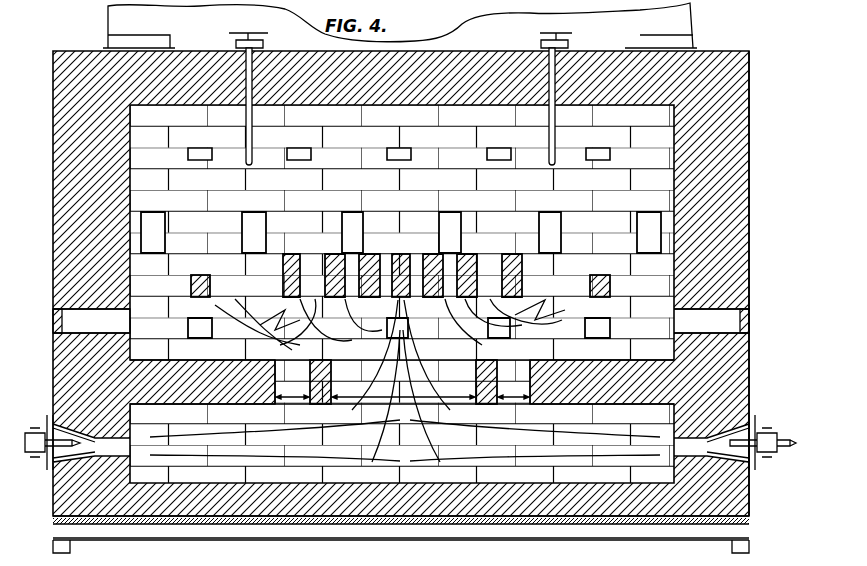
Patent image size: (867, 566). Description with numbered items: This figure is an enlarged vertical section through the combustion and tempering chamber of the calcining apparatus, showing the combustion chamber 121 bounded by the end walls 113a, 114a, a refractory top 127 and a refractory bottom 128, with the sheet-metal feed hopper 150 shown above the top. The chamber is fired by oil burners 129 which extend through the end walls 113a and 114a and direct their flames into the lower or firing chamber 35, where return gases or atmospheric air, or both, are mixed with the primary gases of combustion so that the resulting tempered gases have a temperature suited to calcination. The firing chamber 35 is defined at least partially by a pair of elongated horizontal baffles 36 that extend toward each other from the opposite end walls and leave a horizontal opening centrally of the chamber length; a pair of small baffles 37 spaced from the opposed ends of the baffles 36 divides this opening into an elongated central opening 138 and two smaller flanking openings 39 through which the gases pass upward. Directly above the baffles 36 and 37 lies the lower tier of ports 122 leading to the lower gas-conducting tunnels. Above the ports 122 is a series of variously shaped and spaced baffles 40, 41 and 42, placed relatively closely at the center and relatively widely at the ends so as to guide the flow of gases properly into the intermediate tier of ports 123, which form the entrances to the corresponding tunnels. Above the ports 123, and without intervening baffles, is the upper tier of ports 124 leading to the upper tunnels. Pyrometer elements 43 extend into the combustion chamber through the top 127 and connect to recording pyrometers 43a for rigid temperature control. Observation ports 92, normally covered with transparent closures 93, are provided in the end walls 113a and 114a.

The feed hopper 150 is at (108, 18).
The refractory top 127 is at (291, 55).
The combustion chamber 121 is at (478, 135).
The recording pyrometers 43a is at (236, 44).
The pyrometer elements 43 is at (246, 138).
The ports 124 is at (297, 158).
The ports 123 is at (256, 217).
The baffles 42 is at (200, 275).
The baffles 40 is at (335, 254).
The baffles 41 is at (401, 254).
The end wall 113a is at (62, 266).
The end wall 114a is at (735, 224).
The transparent closures 93 is at (57, 320).
The ports 92 is at (401, 321).
The ports 122 is at (203, 330).
The elongated horizontal baffles 36 is at (402, 382).
The flanking openings 39 is at (402, 382).
The central flame opening 138 is at (396, 411).
The small baffles 37 is at (405, 380).
The oil burners 129 is at (35, 456).
The lower or firing chamber 35 is at (480, 476).
The refractory bottom 128 is at (555, 519).